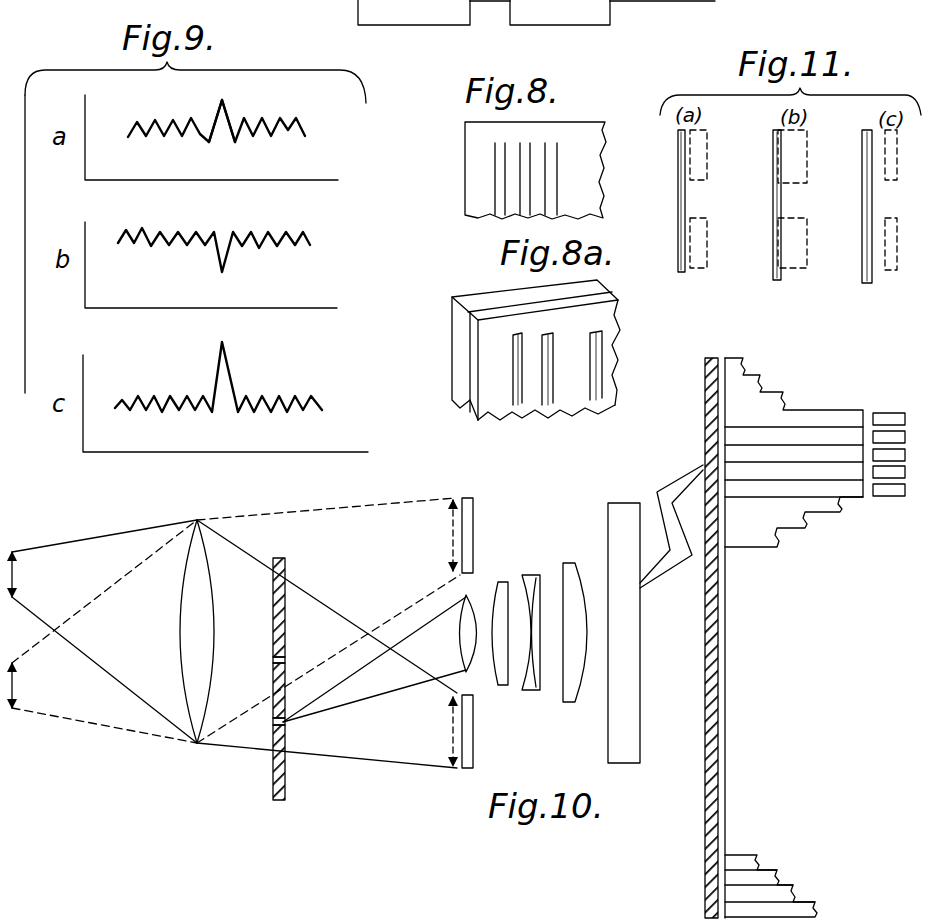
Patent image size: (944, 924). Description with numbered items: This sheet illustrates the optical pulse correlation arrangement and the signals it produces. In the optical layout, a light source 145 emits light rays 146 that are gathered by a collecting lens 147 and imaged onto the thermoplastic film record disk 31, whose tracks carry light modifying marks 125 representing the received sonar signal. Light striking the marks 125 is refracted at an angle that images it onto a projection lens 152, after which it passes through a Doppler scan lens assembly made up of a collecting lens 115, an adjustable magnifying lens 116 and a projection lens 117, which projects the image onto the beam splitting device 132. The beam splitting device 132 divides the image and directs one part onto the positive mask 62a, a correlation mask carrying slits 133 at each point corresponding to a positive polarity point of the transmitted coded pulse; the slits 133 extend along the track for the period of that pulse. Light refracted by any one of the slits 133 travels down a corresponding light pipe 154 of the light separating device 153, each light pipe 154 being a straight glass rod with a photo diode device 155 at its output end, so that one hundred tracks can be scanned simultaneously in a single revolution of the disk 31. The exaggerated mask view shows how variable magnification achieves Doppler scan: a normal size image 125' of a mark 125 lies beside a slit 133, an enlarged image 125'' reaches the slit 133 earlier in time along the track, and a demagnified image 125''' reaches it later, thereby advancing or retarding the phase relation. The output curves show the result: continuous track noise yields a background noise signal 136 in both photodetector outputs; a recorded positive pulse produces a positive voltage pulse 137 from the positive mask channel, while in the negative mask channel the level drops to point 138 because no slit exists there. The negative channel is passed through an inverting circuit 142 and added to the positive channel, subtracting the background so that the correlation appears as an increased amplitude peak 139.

In FIG. 10, the thermoplastic film record disk 31 is at (272, 584).
In FIG. 10, the positive mask 62a is at (711, 357).
In FIG. 10, the collecting lens 115 is at (503, 684).
In FIG. 10, the adjustable magnifying lens 116 is at (533, 691).
In FIG. 10, the projection lens 117 is at (575, 703).
In FIG. 11, the light modifying marks 125 is at (809, 200).
In FIG. 10, the light modifying marks 125 is at (308, 686).
In FIG. 11, the normal size image 125' is at (722, 199).
In FIG. 11, the enlarged image 125'' is at (816, 199).
In FIG. 11, the demagnified image 125''' is at (903, 200).
In FIG. 10, the beam splitting device 132 is at (632, 755).
In FIG. 8, the mask slits 133 is at (555, 173).
In FIG. 8A, the mask slits 133 is at (510, 357).
In FIG. 11, the mask slits 133 is at (680, 218).
In FIG. 10, the mask slits 133 is at (702, 468).
In FIG. 9, the background noise signal 136 is at (156, 126).
In FIG. 9, the positive voltage pulse 137 is at (223, 103).
In FIG. 9, the noise level drop point 138 is at (224, 270).
In FIG. 9, the increased amplitude peak 139 is at (224, 343).
In FIG. 8, the inverting circuit 142 is at (434, 20).
In FIG. 10, the light source 145 is at (16, 572).
In FIG. 10, the light rays 146 is at (135, 527).
In FIG. 10, the collecting lens 147 is at (193, 630).
In FIG. 10, the projection lens 152 is at (463, 642).
In FIG. 10, the light separating device 153 is at (798, 637).
In FIG. 10, the light pipes 154 is at (806, 418).
In FIG. 10, the photo diode device 155 is at (893, 493).